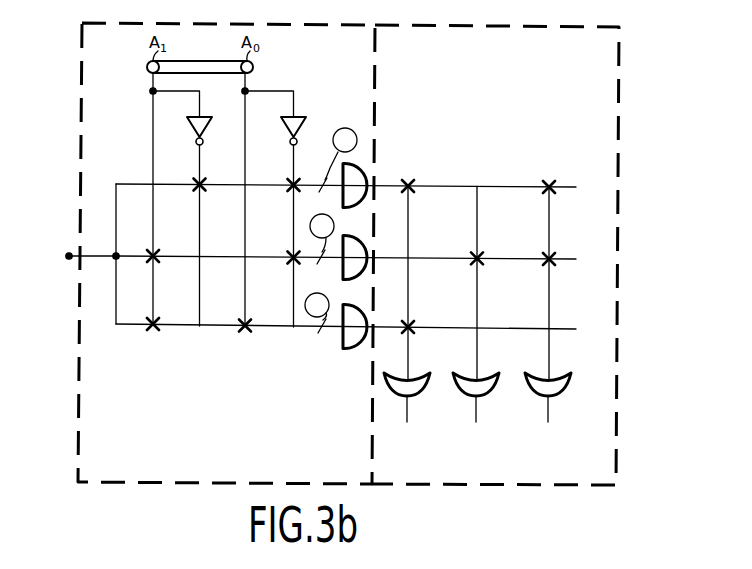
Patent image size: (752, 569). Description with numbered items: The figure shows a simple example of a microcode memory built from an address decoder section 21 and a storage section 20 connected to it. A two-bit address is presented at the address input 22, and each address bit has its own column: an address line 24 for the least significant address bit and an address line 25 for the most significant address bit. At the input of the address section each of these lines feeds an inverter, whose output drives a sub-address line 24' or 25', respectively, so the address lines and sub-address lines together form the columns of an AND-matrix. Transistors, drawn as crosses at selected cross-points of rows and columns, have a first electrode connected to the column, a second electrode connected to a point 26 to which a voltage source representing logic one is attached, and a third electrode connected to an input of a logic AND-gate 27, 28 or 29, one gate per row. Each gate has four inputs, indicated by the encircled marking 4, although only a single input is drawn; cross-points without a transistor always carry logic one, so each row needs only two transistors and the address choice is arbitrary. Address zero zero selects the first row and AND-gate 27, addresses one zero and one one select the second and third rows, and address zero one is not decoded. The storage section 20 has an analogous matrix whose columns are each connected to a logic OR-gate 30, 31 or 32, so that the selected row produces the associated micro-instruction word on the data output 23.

The storage section 20 is at (597, 119).
The address decoder section 21 is at (105, 129).
The address input 22 is at (147, 65).
The data output 23 is at (486, 426).
The address line 24 is at (236, 202).
The sub-address line 24' is at (287, 209).
The address line 25 is at (139, 201).
The sub-address line 25' is at (195, 208).
The point 26 is at (66, 258).
The logic AND-gate 27 is at (354, 205).
The logic AND-gate 28 is at (354, 277).
The logic AND-gate 29 is at (352, 347).
The logic OR-gate 30 is at (416, 387).
The logic OR-gate 31 is at (485, 387).
The logic OR-gate 32 is at (556, 398).
The number of bus lines indicator 4 is at (331, 230).